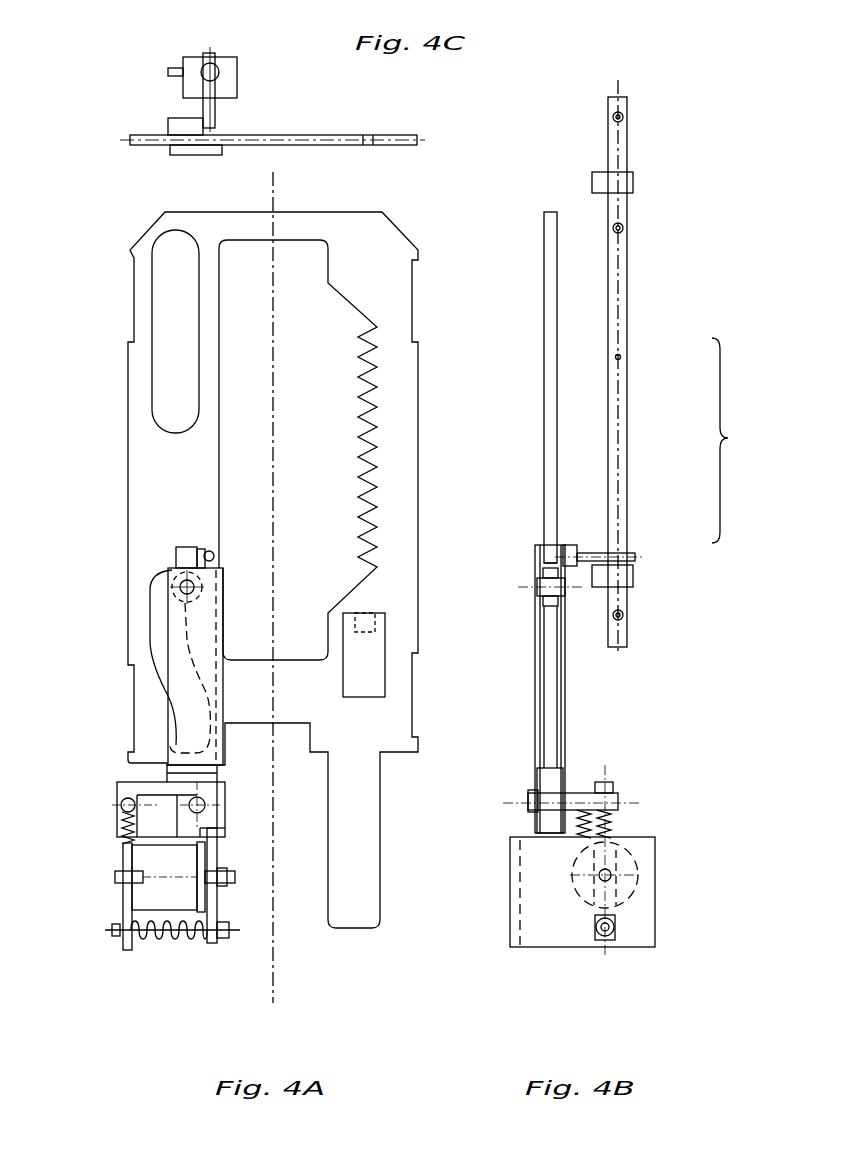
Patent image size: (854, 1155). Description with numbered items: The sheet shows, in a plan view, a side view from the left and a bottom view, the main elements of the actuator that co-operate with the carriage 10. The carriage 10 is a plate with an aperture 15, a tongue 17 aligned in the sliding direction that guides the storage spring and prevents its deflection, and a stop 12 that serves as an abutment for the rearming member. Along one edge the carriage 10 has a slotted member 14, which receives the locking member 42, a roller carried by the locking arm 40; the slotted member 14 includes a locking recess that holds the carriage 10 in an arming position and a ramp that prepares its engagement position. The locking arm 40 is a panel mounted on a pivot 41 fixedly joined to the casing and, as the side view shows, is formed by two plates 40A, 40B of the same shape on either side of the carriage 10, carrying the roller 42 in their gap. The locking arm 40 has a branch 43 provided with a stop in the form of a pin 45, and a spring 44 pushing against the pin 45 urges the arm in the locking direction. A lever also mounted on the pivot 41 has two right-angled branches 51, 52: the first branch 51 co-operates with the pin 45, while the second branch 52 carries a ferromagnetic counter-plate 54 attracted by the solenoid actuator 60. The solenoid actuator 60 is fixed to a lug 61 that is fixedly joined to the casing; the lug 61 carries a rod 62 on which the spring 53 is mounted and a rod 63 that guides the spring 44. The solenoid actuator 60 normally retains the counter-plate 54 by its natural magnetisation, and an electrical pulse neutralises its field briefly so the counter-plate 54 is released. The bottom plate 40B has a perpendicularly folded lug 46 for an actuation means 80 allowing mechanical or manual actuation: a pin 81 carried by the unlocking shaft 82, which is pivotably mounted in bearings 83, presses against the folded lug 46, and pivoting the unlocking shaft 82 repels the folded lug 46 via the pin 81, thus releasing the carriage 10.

In FIG. 4A, the carriage 10 is at (170, 460).
In FIG. 4B, the carriage 10 is at (548, 268).
In FIG. 4C, the carriage 10 is at (398, 135).
In FIG. 4A, the stop 12 is at (375, 671).
In FIG. 4A, the slotted member 14 is at (160, 625).
In FIG. 4A, the aperture 15 is at (316, 399).
In FIG. 4C, the aperture 15 is at (293, 135).
In FIG. 4A, the tongue 17 is at (364, 894).
In FIG. 4A, the locking arm 40 is at (172, 573).
In FIG. 4B, the plate of the locking arm 40A is at (535, 700).
In FIG. 4C, the plate of the locking arm 40A is at (172, 152).
In FIG. 4B, the bottom plate of the locking arm 40B is at (565, 700).
In FIG. 4C, the bottom plate of the locking arm 40B is at (168, 128).
In FIG. 4A, the pivot 41 is at (206, 806).
In FIG. 4B, the locking member 42 is at (549, 606).
In FIG. 4A, the branch 43 is at (112, 784).
In FIG. 4A, the spring 44 is at (125, 832).
In FIG. 4B, the spring 44 is at (613, 822).
In FIG. 4A, the stop in the form of a pin 45 is at (121, 805).
In FIG. 4B, the stop in the form of a pin 45 is at (620, 798).
In FIG. 4A, the folded lug 46 is at (199, 550).
In FIG. 4C, the folded lug 46 is at (197, 115).
In FIG. 4B, the first branch 51 is at (610, 783).
In FIG. 4A, the second branch 52 is at (212, 907).
In FIG. 4B, the second branch 52 is at (630, 835).
In FIG. 4A, the spring 53 is at (166, 945).
In FIG. 4A, the counter-plate 54 is at (203, 850).
In FIG. 4A, the solenoid actuator 60 is at (150, 873).
In FIG. 4A, the lug 61 is at (128, 906).
In FIG. 4B, the lug 61 is at (633, 908).
In FIG. 4A, the rod 62 is at (118, 932).
In FIG. 4A, the rod 63 is at (125, 852).
In FIG. 4B, the actuation means 80 is at (735, 440).
In FIG. 4B, the pin 81 is at (593, 553).
In FIG. 4C, the pin 81 is at (206, 97).
In FIG. 4B, the unlocking shaft 82 is at (622, 357).
In FIG. 4C, the unlocking shaft 82 is at (212, 52).
In FIG. 4B, the bearings 83 is at (635, 185).